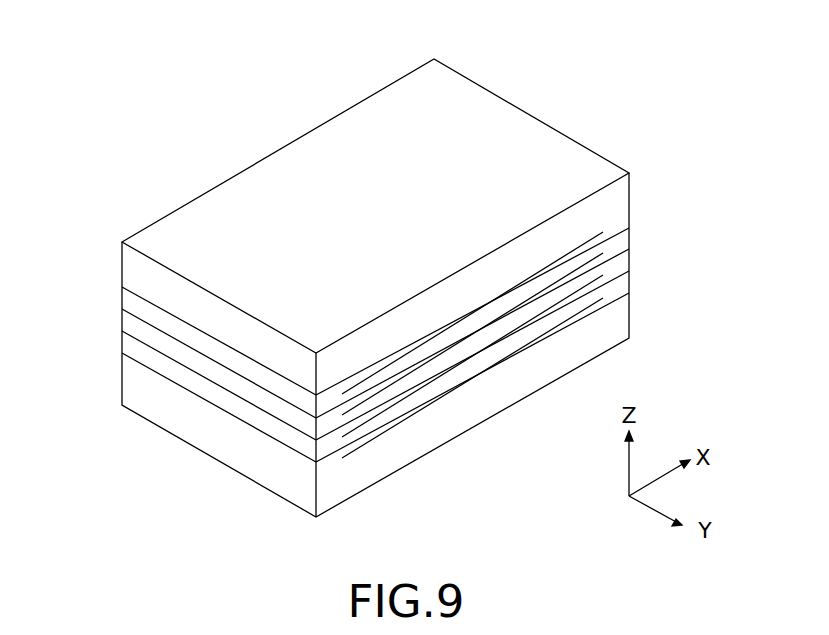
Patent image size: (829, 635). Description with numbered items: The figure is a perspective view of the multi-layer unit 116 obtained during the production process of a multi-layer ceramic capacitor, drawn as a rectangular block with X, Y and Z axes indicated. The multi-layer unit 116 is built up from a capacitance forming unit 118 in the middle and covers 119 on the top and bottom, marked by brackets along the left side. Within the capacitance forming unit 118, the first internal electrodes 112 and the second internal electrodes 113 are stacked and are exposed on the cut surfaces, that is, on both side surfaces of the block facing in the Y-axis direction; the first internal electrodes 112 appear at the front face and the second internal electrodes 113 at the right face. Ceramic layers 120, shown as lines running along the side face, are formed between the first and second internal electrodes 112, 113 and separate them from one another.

The multi-layer unit 116 is at (553, 93).
The covers 119 is at (118, 242).
The capacitance forming unit 118 is at (118, 287).
The ceramic layers 120 is at (538, 310).
The second internal electrodes 113 is at (629, 228).
The first internal electrodes 112 is at (212, 338).